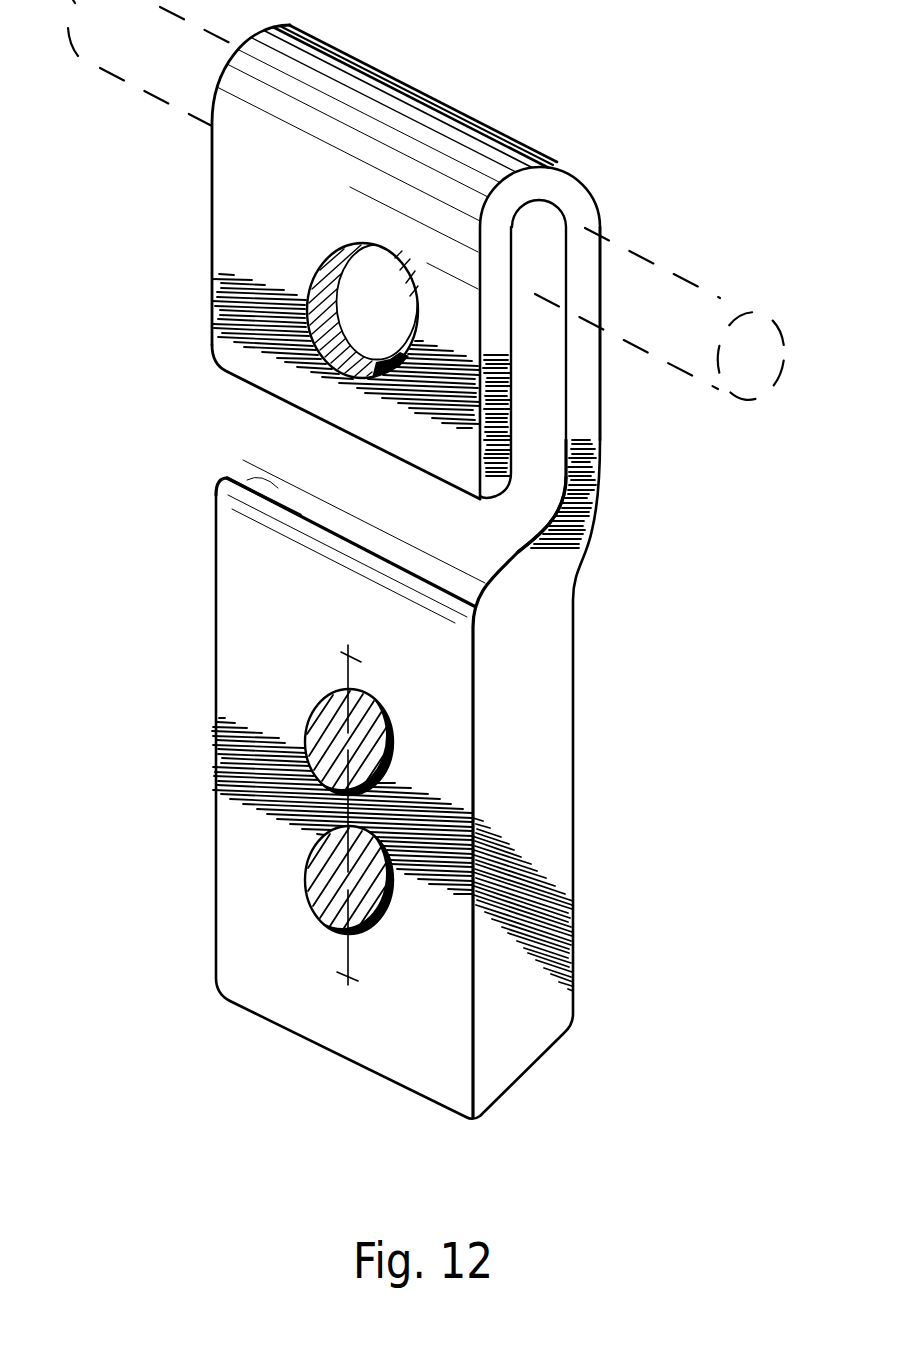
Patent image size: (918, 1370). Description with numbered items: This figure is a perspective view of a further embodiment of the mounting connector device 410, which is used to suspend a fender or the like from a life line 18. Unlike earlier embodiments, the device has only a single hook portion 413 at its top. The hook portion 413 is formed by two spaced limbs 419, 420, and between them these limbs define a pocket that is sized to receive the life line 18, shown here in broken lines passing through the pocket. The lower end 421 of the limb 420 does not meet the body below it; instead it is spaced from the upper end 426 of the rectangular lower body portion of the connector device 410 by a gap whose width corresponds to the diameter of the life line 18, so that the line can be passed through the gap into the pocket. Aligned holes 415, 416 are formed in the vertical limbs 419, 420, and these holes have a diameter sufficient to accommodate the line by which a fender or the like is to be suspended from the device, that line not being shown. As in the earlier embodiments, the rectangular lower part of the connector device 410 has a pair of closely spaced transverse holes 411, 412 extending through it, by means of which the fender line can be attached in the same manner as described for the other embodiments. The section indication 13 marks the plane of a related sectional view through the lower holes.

The connector device 410 is at (230, 1009).
The transverse hole 411 is at (358, 933).
The transverse hole 412 is at (393, 734).
The hook portion 413 is at (462, 112).
The hole 415 is at (347, 276).
The hole 416 is at (352, 378).
The limb 419 is at (587, 423).
The limb 420 is at (488, 470).
The lower end 421 is at (265, 393).
The upper end 426 is at (219, 488).
The life line 18 is at (692, 258).
The section line 13- 13 is at (298, 950).